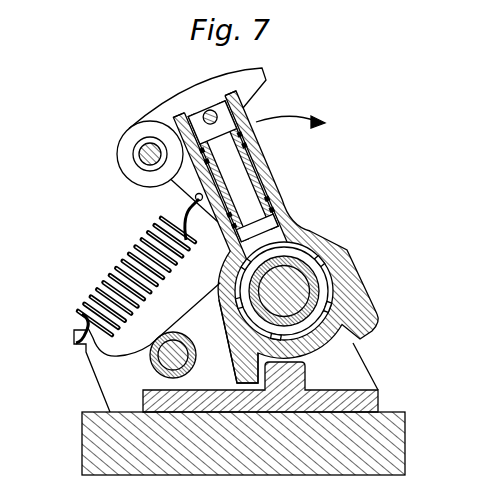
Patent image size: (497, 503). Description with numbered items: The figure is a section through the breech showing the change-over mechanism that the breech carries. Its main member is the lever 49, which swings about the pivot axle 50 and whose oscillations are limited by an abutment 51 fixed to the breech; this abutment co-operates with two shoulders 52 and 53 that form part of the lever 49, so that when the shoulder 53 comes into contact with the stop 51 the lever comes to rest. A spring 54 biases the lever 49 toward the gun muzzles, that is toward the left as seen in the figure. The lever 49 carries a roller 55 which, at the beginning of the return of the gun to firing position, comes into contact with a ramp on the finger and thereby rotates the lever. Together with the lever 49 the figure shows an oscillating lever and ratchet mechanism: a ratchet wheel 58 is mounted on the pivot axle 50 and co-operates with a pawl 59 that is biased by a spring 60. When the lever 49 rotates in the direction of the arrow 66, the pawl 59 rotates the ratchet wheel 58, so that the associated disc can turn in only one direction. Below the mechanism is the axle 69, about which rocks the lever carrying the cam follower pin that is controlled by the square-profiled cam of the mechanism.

The lever 49 is at (262, 161).
The axle 50 is at (298, 281).
The abutment 51 is at (307, 377).
The shoulder 52 is at (242, 373).
The shoulder 53 is at (368, 327).
The spring 54 is at (128, 251).
The roller 55 is at (127, 142).
The ratchet wheel 58 is at (326, 288).
The pawl 59 is at (230, 252).
The spring 60 is at (266, 203).
The arrow 66 is at (290, 111).
The axle 69 is at (182, 338).